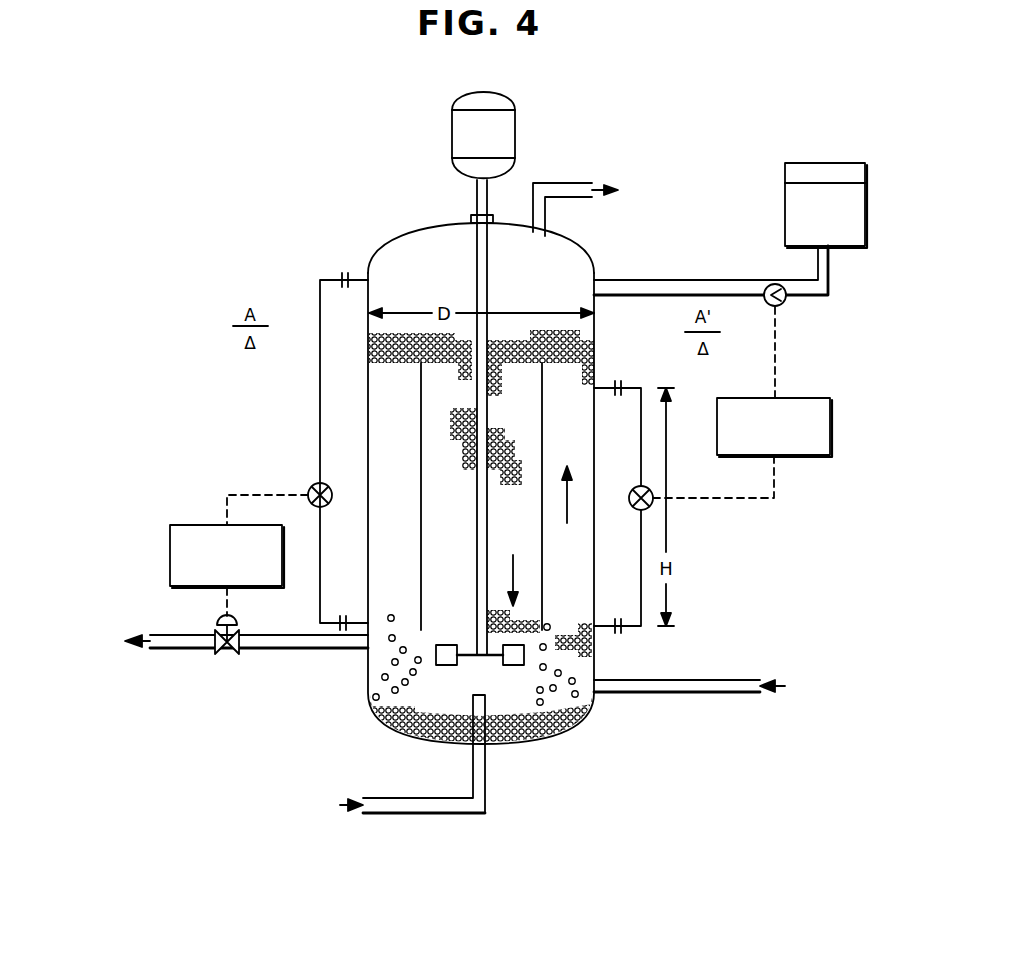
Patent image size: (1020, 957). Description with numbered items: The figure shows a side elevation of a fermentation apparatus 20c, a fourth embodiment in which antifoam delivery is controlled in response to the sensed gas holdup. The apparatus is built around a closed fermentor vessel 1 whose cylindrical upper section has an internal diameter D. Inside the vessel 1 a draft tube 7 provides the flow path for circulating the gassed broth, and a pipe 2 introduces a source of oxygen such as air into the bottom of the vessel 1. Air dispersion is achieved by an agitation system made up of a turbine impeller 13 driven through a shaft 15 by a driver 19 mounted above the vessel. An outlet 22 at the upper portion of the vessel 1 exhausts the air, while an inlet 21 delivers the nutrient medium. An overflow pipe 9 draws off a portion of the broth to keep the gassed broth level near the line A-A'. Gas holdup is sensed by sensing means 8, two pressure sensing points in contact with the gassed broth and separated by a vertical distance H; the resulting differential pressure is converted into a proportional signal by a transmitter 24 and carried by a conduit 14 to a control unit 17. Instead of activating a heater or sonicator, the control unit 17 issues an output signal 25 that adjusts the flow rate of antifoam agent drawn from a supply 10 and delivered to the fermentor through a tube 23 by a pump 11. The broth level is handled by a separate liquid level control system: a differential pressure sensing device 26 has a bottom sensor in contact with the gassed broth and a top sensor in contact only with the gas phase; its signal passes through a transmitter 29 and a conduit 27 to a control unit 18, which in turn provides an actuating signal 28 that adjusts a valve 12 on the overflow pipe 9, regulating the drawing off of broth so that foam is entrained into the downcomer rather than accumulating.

The fermentor vessel 1 is at (368, 496).
The pipe 2 is at (405, 798).
The draft tube 7 is at (421, 435).
The sensing means 8 is at (618, 382).
The overflow pipe 9 is at (295, 650).
The antifoam agent supply 10 is at (865, 215).
The pump 11 is at (772, 284).
The valve 12 is at (227, 658).
The turbine impeller 13 is at (512, 680).
The conduit 14 is at (740, 500).
The shaft 15 is at (495, 428).
The control unit 17 is at (832, 427).
The control unit 18 is at (170, 556).
The driver 19 is at (516, 91).
The apparatus 20c is at (600, 268).
The inlet 21 is at (722, 695).
The outlet 22 is at (563, 183).
The tube 23 is at (830, 278).
The transmitter 24 is at (636, 487).
The output signal 25 is at (777, 358).
The differential pressure sensing device 26 is at (345, 272).
The conduit 27 is at (244, 490).
The actuating signal 28 is at (230, 606).
The transmitter 29 is at (311, 484).